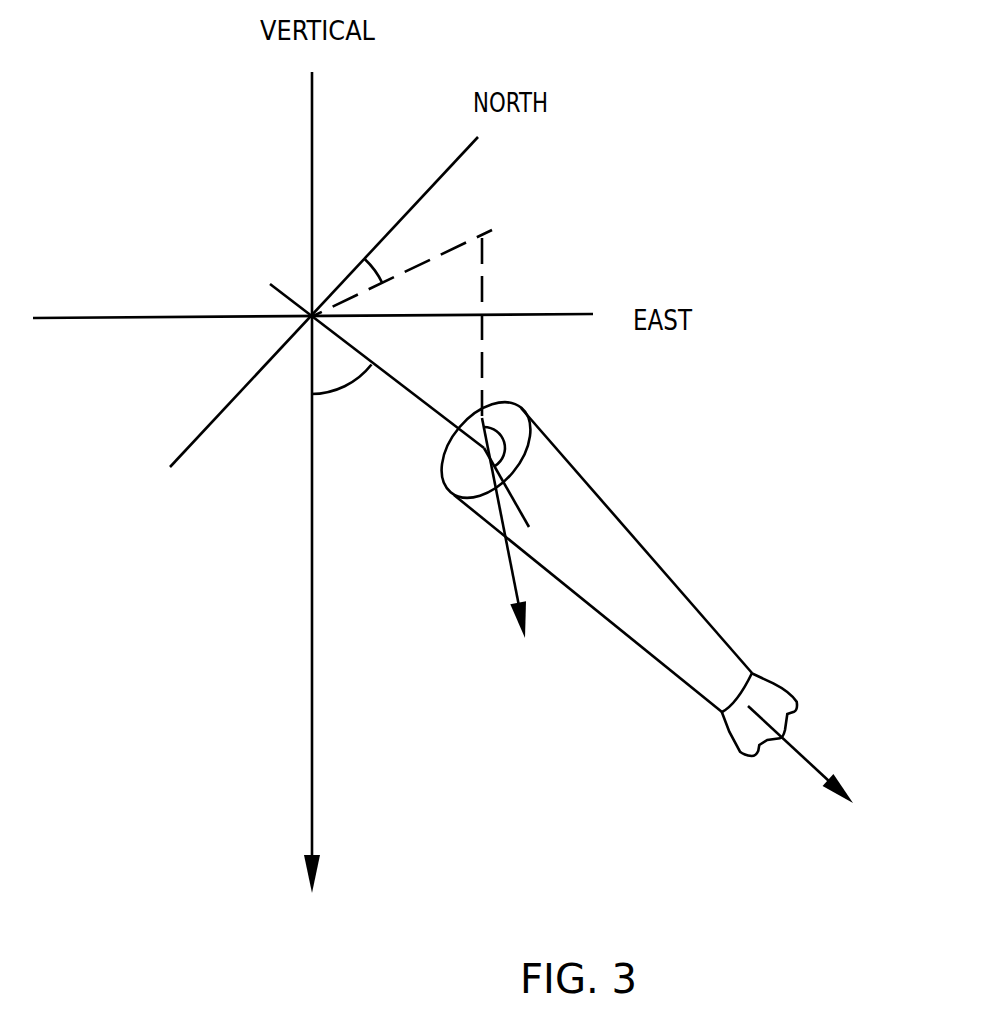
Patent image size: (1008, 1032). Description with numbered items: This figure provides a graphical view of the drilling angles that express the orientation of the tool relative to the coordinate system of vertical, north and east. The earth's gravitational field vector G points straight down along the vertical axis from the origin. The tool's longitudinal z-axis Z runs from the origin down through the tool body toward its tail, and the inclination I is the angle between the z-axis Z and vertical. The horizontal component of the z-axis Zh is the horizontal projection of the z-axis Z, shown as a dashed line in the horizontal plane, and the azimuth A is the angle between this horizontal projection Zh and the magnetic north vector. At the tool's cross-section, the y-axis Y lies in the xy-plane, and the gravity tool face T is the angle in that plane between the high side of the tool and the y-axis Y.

The earth's gravitational field vector G is at (313, 513).
The horizontal component of the z-axis Zh is at (430, 313).
The azimuth A is at (387, 259).
The inclination I is at (341, 399).
The gravity tool face T is at (506, 469).
The y-axis Y is at (510, 562).
The z-axis Z is at (818, 779).